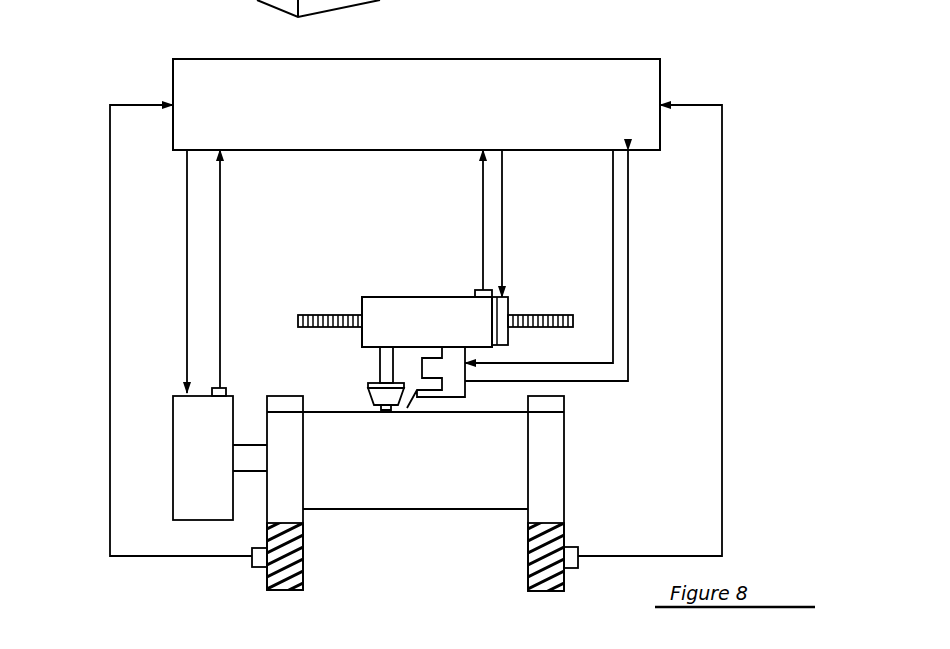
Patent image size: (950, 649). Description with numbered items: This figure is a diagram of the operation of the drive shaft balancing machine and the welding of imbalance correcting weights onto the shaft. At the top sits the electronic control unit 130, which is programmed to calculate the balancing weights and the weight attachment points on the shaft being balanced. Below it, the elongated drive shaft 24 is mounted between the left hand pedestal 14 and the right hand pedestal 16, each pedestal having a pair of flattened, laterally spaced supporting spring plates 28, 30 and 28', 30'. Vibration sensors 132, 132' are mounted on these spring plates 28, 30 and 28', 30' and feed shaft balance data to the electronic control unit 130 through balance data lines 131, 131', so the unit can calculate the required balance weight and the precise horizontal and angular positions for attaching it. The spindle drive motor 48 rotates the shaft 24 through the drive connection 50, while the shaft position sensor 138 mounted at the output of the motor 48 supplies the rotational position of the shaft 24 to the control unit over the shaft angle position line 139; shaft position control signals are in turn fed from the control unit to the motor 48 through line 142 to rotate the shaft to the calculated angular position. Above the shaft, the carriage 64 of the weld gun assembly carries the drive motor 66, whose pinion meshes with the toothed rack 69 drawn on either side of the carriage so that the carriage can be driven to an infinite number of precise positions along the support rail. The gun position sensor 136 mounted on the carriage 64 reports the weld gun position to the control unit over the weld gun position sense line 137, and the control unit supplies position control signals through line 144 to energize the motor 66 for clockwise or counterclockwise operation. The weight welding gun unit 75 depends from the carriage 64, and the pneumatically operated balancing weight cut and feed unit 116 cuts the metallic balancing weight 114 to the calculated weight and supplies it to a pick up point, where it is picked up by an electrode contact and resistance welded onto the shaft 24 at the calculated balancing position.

The electronic control unit (ECU) 130 is at (424, 55).
The shaft position control line 142 is at (187, 216).
The shaft angle position line 139 is at (220, 222).
The balance data line 131 is at (135, 330).
The balance data line 131' is at (700, 330).
The weld gun position sense line 137 is at (483, 204).
The weld gun position control line 144 is at (502, 202).
The carriage 64 is at (395, 308).
The gun position sensor 136 is at (482, 288).
The drive motor 66 is at (506, 304).
The rack 69 is at (530, 316).
The weight welding gun unit 75 is at (378, 359).
The balancing weight 114 is at (372, 398).
The balancing weight cut and feed unit 116 is at (452, 357).
The spindle drive motor 48 is at (182, 452).
The shaft position sensor 138 is at (221, 387).
The drive connection 50 is at (250, 452).
The left hand pedestal 14 is at (267, 497).
The supporting spring plate 28 is at (325, 556).
The supporting spring plate 30 is at (325, 556).
The supporting spring plate 28' is at (500, 556).
The supporting spring plate 30' is at (500, 556).
The vibration sensor 132 is at (238, 584).
The vibration sensor 132' is at (593, 586).
The drive shaft 24 is at (418, 498).
The right hand pedestal 16 is at (566, 465).